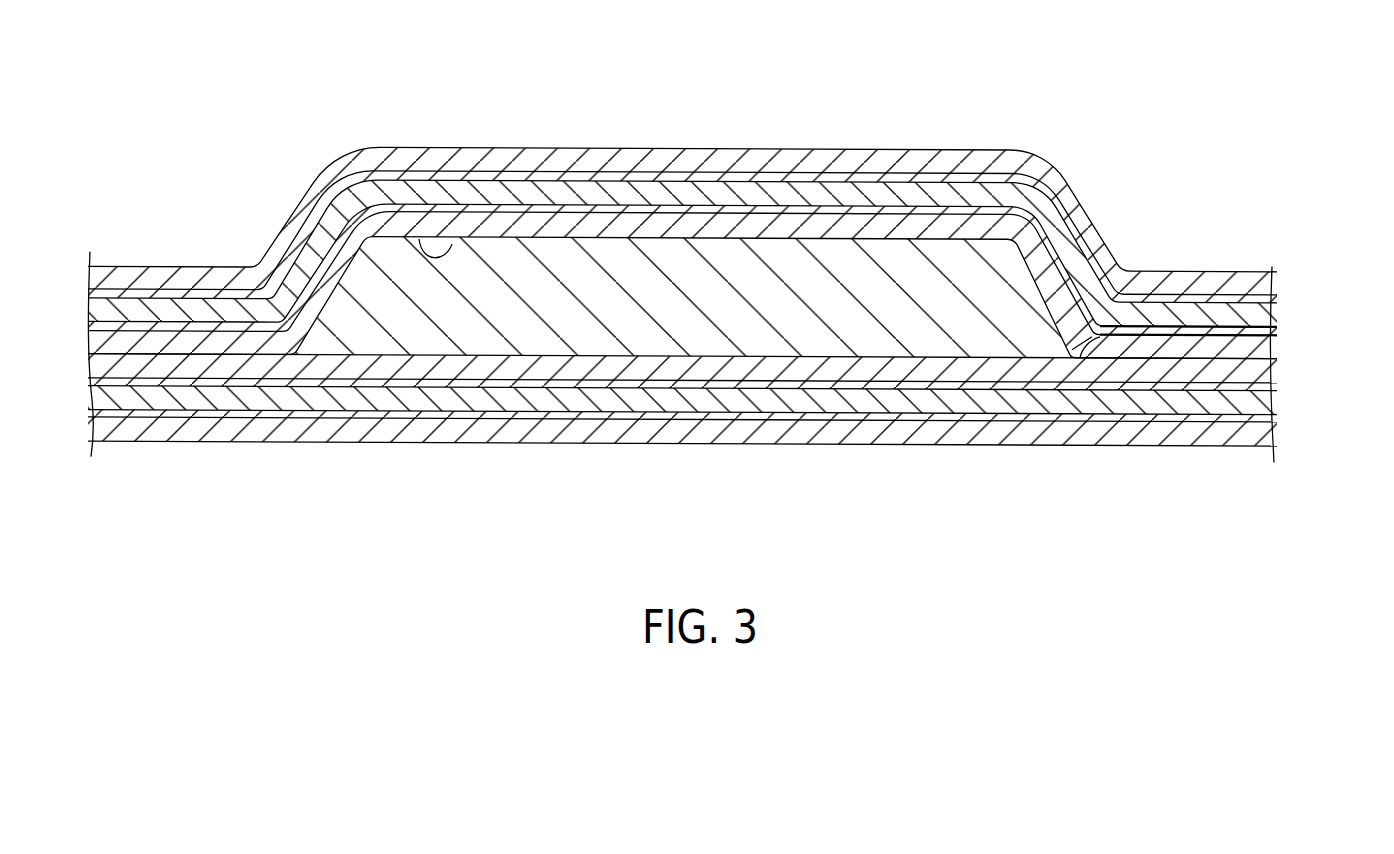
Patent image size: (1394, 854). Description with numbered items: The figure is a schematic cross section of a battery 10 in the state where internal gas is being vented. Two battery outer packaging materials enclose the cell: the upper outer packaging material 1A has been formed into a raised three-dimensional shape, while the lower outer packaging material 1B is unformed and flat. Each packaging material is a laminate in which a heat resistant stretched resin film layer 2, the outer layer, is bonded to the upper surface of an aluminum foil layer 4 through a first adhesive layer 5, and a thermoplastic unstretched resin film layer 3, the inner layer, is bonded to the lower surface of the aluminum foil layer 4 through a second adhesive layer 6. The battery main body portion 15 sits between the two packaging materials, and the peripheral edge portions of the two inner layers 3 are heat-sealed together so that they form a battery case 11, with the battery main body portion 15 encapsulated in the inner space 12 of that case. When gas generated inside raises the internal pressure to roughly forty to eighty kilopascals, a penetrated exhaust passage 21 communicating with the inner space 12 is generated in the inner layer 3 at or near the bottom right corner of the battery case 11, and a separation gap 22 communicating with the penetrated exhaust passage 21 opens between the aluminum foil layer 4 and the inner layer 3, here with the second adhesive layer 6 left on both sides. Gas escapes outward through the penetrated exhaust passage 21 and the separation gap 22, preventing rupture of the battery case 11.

The outer packaging material 1A is at (290, 230).
The outer packaging material 1B is at (285, 430).
The heat resistant stretched resin film layer 2 is at (848, 160).
The thermoplastic unstretched resin film layer 3 is at (1041, 268).
The aluminum foil layer 4 is at (1084, 273).
The first adhesive layer 5 is at (808, 173).
The second adhesive layer 6 is at (1062, 277).
The battery 10 is at (988, 110).
The battery case 11 is at (623, 160).
The inner space 12 is at (419, 238).
The battery main body portion 15 is at (425, 320).
The penetrated exhaust passage 21 is at (1078, 358).
The separation gap 22 is at (1277, 333).